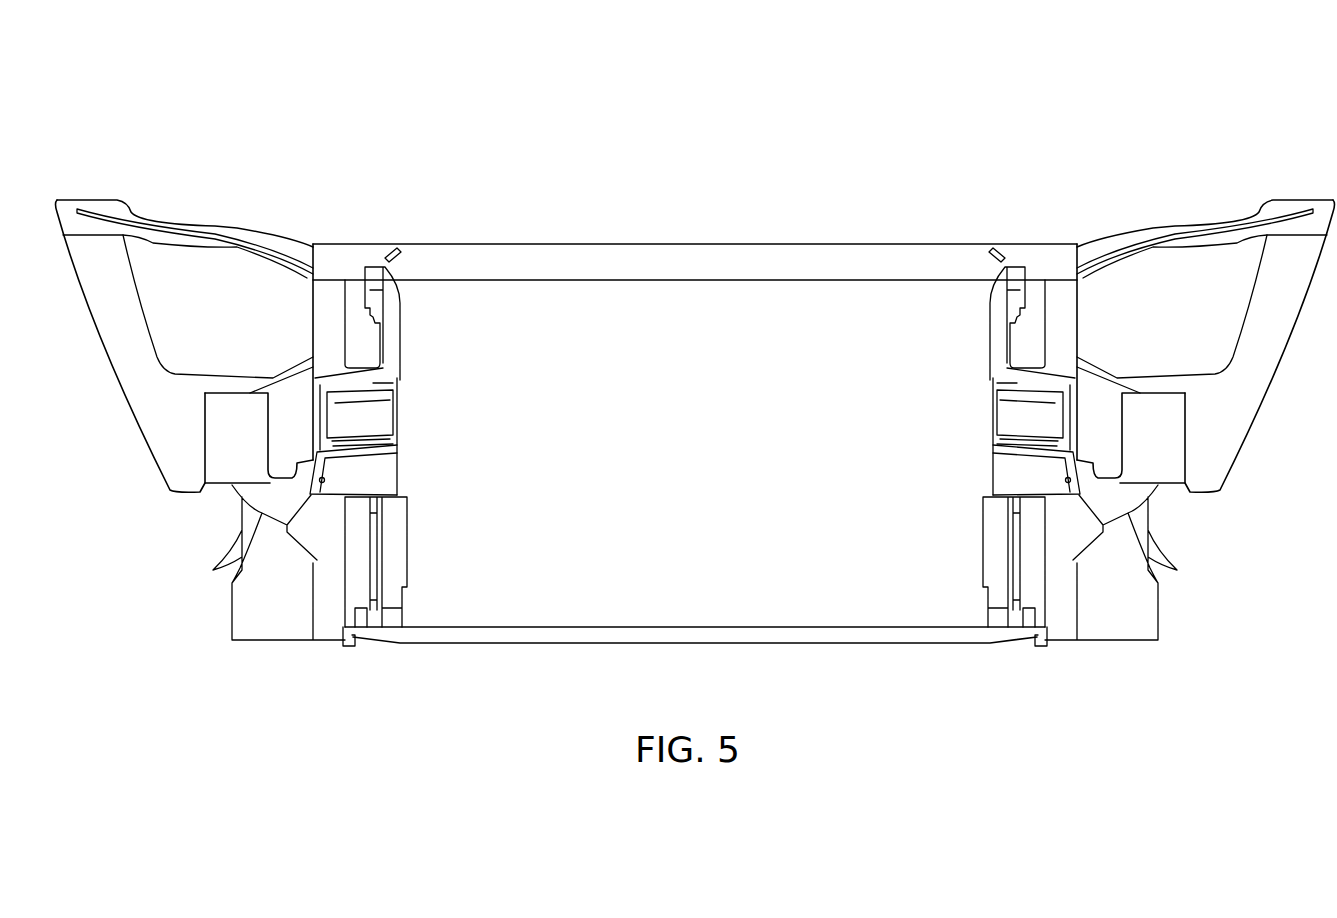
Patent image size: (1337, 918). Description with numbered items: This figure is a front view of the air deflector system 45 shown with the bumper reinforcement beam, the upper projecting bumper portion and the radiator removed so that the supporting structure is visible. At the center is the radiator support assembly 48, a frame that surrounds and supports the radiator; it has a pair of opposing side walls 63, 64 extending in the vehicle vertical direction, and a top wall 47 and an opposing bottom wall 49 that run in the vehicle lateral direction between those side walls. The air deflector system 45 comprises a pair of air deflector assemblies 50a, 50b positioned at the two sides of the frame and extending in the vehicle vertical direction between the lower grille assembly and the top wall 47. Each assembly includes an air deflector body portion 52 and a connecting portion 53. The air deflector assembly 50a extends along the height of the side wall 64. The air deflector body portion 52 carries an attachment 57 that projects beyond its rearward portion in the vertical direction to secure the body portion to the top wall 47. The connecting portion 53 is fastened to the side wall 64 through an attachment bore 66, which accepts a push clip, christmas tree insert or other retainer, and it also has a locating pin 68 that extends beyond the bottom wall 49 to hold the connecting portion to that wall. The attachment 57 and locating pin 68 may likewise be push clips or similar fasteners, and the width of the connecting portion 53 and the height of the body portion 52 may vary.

The air deflector system 45 is at (622, 90).
The top wall 47 is at (766, 255).
The radiator support assembly 48 is at (695, 422).
The bottom wall 49 is at (467, 645).
The air deflector assembly 50a is at (350, 140).
The air deflector assembly 50b is at (1095, 135).
The air deflector body portion 52 is at (418, 341).
The connecting portion 53 is at (368, 418).
The attachment 57 is at (398, 245).
The side wall 63 is at (1072, 323).
The side wall 64 is at (317, 573).
The attachment bore 66 is at (325, 480).
The locating pin 68 is at (345, 647).